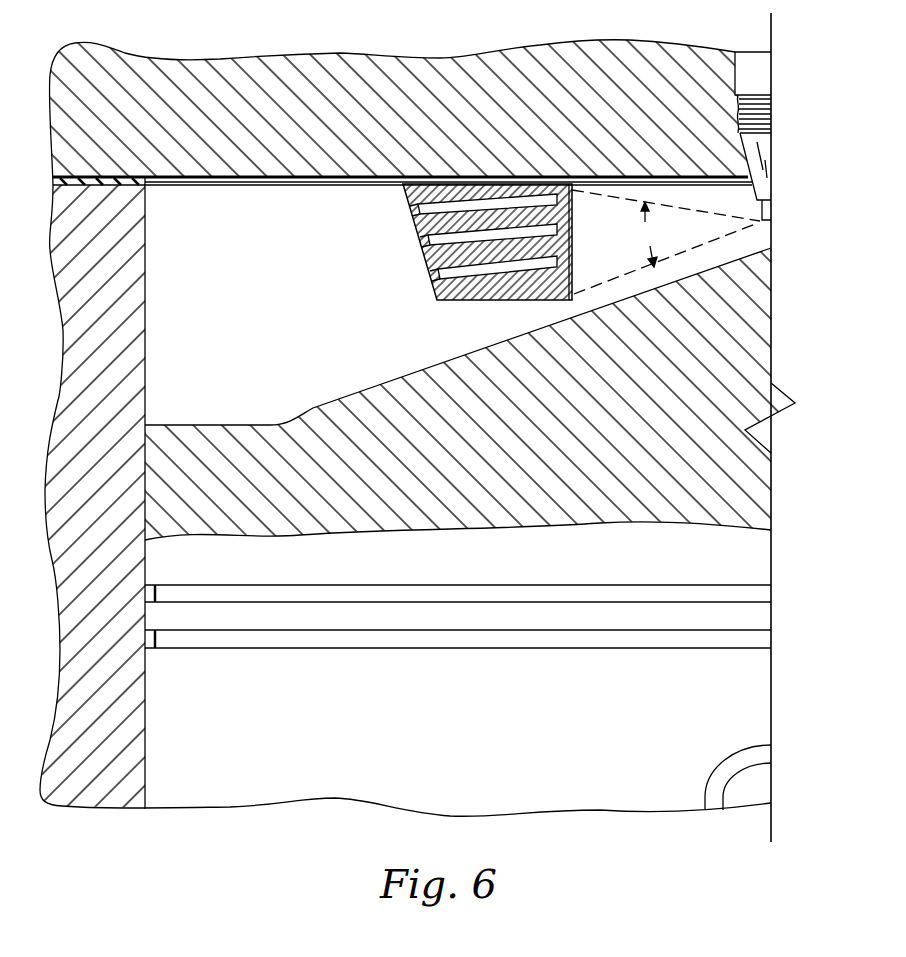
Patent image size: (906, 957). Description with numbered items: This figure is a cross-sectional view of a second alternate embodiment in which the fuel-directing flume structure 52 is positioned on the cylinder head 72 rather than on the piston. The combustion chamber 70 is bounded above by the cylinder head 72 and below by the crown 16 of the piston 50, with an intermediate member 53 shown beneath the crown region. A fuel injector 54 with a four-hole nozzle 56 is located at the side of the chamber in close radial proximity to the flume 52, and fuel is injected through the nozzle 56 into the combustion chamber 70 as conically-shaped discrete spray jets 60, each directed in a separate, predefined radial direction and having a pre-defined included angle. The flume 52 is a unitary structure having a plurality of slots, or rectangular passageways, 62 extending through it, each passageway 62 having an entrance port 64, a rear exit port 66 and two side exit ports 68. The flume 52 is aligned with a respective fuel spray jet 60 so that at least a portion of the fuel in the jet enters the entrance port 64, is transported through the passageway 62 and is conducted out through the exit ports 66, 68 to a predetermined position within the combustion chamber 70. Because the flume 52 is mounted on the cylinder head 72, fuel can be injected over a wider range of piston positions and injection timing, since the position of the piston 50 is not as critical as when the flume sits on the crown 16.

The cylinder head 72 is at (393, 60).
The combustion chamber 70 is at (233, 235).
The crown 16 is at (310, 410).
The intermediate member 53 is at (452, 566).
The piston 50 is at (452, 738).
The flume structure 52 is at (366, 293).
The slots 62 is at (452, 233).
The rear exit port 66 is at (420, 214).
The side exit ports 68 is at (560, 183).
The entrance port 64 is at (573, 205).
The fuel spray jets 60 is at (688, 208).
The fuel injector 54 is at (765, 160).
The four-hole nozzle 56 is at (770, 216).